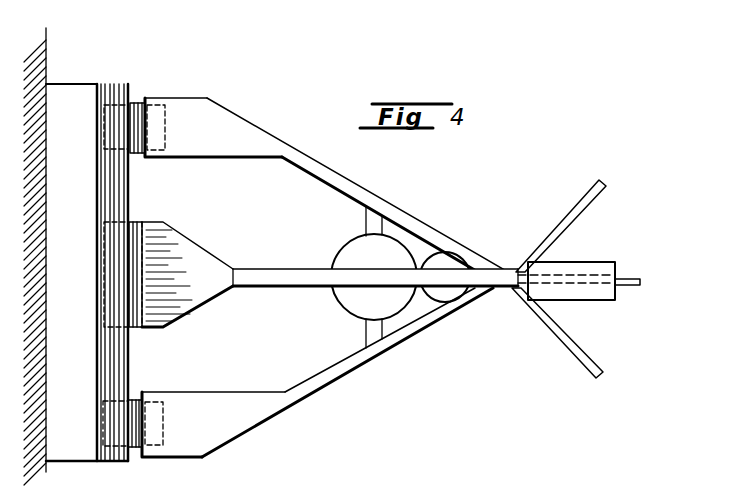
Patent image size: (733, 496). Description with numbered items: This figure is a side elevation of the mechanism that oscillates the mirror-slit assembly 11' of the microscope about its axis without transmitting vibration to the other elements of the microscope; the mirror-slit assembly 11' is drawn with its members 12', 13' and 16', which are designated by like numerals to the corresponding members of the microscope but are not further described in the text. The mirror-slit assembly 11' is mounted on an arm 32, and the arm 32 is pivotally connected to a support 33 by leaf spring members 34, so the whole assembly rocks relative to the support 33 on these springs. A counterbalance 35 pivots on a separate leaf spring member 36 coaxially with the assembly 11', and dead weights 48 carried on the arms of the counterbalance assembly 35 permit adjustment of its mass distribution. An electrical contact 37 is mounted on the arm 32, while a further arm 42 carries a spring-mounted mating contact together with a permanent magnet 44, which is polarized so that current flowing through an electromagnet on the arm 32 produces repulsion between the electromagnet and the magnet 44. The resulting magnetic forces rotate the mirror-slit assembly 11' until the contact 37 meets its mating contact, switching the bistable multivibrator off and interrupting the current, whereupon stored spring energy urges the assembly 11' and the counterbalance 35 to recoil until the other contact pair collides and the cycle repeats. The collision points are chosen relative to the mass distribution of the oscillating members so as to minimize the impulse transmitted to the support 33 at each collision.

The support 33 is at (60, 90).
The leaf spring members 34 is at (138, 100).
The leaf spring member 36 is at (134, 222).
The arm 32 is at (320, 185).
The counterbalance 35 is at (232, 298).
The permanent magnet 44 is at (347, 252).
The arm 42 is at (275, 278).
The electrical contact 37 is at (447, 262).
The dead weights 48 is at (605, 305).
The pin 16' is at (651, 262).
The upper arm 12' is at (561, 226).
The lower arm 13' is at (557, 333).
The mirror-slit assembly 11' is at (634, 210).